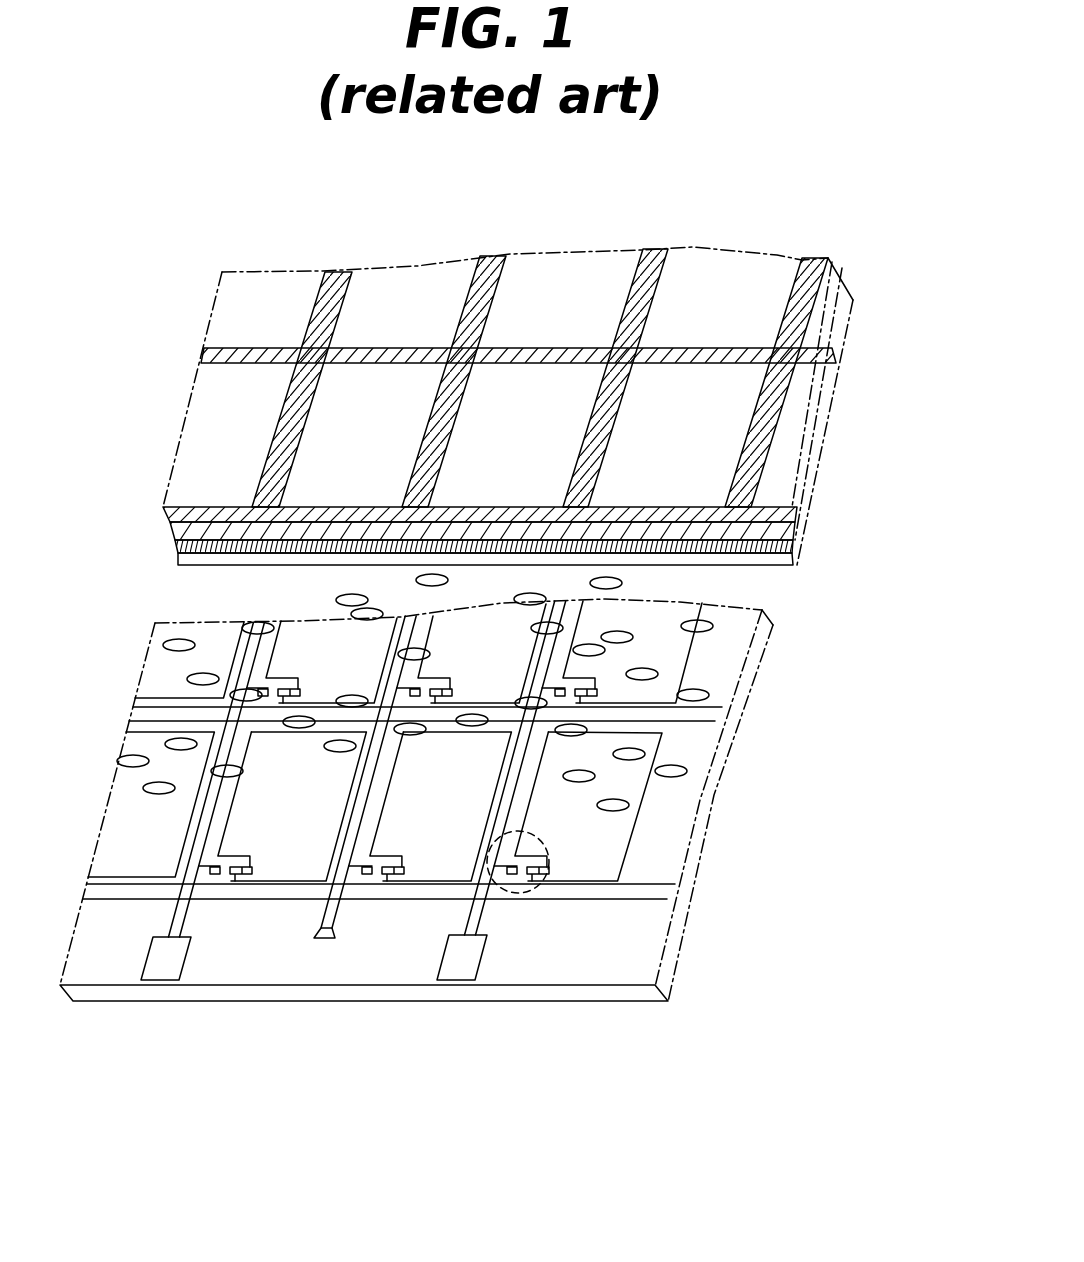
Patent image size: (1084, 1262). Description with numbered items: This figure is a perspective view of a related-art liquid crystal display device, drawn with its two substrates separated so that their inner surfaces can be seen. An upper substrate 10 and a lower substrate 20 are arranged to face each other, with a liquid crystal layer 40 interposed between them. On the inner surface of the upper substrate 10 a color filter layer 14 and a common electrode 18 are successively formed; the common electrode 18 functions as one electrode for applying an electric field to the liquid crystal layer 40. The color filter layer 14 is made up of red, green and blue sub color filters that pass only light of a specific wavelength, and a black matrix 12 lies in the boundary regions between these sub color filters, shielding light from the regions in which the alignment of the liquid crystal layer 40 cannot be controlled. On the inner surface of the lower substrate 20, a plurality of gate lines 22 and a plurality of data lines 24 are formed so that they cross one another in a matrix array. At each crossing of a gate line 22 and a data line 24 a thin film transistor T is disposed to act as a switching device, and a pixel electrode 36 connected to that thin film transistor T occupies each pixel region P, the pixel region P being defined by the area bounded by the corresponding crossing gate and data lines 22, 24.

The upper substrate 10 is at (546, 426).
The black matrix 12 is at (838, 357).
The color filter layer 14 is at (765, 320).
The common electrode 18 is at (795, 565).
The lower substrate 20 is at (638, 992).
The gate line 22 is at (642, 892).
The data line 24 is at (466, 928).
The pixel electrode 36 is at (627, 860).
The liquid crystal layer 40 is at (696, 695).
The pixel region P is at (665, 812).
The thin film transistor T is at (528, 891).